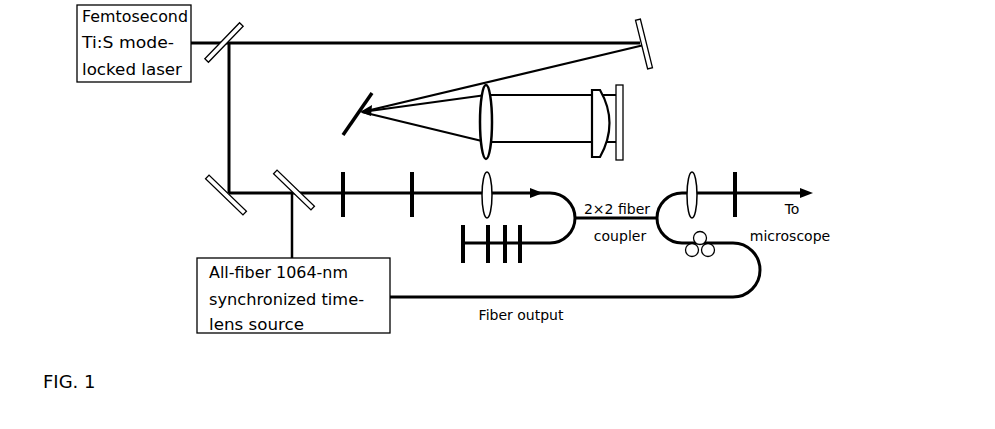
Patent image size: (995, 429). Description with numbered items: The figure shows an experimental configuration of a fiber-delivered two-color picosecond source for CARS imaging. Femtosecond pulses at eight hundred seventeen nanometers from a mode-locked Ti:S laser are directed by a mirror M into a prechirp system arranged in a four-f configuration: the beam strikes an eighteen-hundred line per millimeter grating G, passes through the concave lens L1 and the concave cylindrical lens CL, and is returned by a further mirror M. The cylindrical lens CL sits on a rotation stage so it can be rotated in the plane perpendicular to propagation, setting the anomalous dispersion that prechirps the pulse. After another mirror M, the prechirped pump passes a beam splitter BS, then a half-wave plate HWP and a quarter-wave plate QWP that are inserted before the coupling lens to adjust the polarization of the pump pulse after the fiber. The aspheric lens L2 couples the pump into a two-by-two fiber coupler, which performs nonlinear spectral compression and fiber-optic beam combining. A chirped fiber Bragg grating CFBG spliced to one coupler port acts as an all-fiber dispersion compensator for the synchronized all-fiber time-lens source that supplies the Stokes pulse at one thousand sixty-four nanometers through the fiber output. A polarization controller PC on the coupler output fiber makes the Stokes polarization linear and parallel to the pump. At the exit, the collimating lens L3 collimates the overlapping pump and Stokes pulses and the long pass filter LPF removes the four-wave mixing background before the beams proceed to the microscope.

The mirror M is at (429, 116).
The grating G is at (357, 112).
The concave lens L1 is at (476, 122).
The concave cylindrical lens CL is at (586, 123).
The beam splitter BS is at (298, 190).
The half-wave plate HWP is at (342, 207).
The quarter-wave plate QWP is at (411, 207).
The aspheric lens L2 is at (498, 195).
The chirped fiber Bragg grating CFBG is at (516, 245).
The collimating lens L3 is at (703, 195).
The long pass filter LPF is at (753, 194).
The polarization controller PC is at (700, 254).